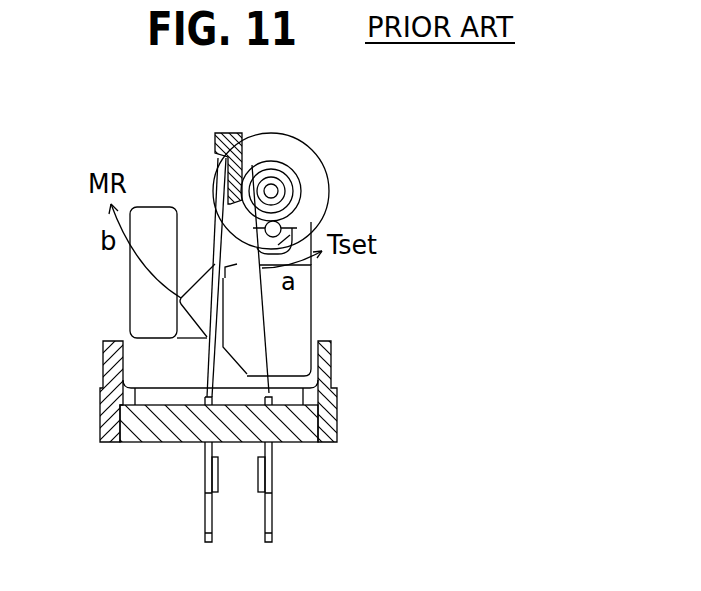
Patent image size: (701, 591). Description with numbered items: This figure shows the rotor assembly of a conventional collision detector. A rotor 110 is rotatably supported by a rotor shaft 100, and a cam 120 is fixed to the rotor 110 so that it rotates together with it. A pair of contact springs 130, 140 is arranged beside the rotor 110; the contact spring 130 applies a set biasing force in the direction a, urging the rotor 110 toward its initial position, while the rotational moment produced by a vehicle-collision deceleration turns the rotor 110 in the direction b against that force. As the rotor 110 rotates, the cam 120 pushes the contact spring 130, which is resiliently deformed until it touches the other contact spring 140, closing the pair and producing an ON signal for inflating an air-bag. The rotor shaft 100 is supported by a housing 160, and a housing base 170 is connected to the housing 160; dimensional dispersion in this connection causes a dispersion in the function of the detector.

The rotor shaft 100 is at (272, 191).
The rotor 110 is at (300, 313).
The cam 120 is at (283, 226).
The contact spring 130 is at (268, 334).
The contact spring 140 is at (213, 317).
The housing 160 is at (331, 398).
The housing base 170 is at (300, 427).